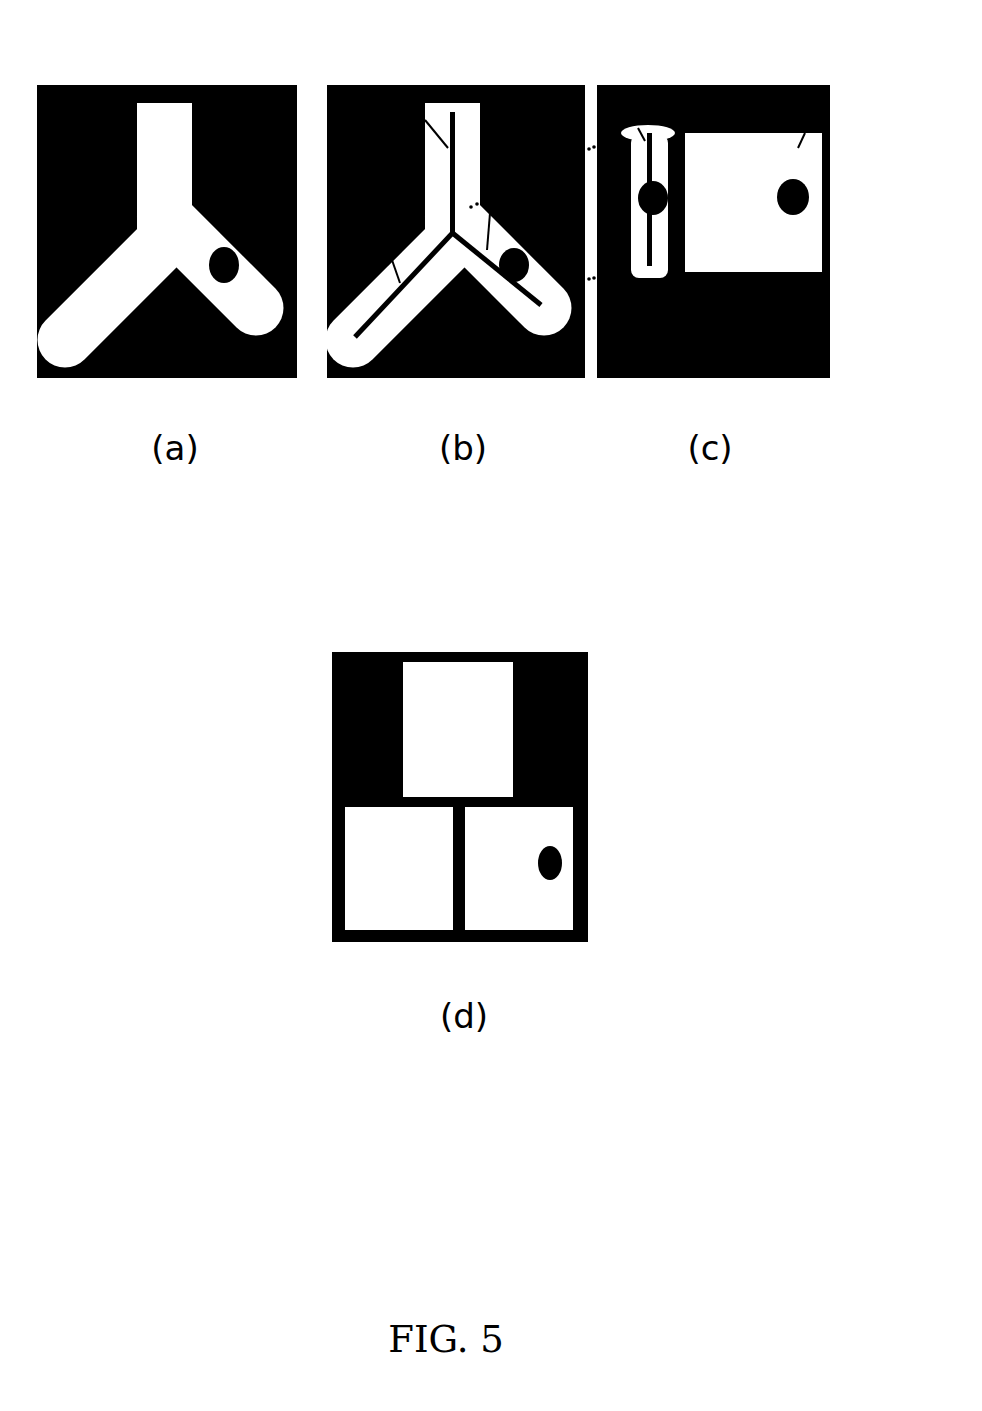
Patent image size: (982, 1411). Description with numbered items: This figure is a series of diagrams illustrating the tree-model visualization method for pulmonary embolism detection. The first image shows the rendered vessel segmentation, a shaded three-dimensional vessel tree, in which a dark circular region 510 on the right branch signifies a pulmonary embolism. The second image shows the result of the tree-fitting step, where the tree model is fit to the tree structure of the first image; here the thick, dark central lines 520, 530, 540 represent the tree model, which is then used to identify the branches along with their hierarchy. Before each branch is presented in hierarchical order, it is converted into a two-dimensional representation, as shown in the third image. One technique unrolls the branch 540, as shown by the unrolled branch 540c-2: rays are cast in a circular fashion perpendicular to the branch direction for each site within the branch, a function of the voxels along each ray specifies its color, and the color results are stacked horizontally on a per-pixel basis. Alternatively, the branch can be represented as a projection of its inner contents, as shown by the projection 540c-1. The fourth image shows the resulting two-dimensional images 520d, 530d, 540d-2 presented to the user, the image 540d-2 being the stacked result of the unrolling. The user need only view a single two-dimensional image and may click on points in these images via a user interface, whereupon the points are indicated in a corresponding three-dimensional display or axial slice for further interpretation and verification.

The dark circular region 510 is at (248, 83).
The central line 520 is at (355, 83).
The central line 530 is at (402, 83).
The branch 540 is at (497, 83).
The projection of inner contents 540c-1 is at (622, 83).
The unrolled branch 540c-2 is at (818, 83).
The 2D image 530d is at (452, 710).
The 2D image 520d is at (390, 870).
The 2D image of unrolled branch 540d-2 is at (502, 833).